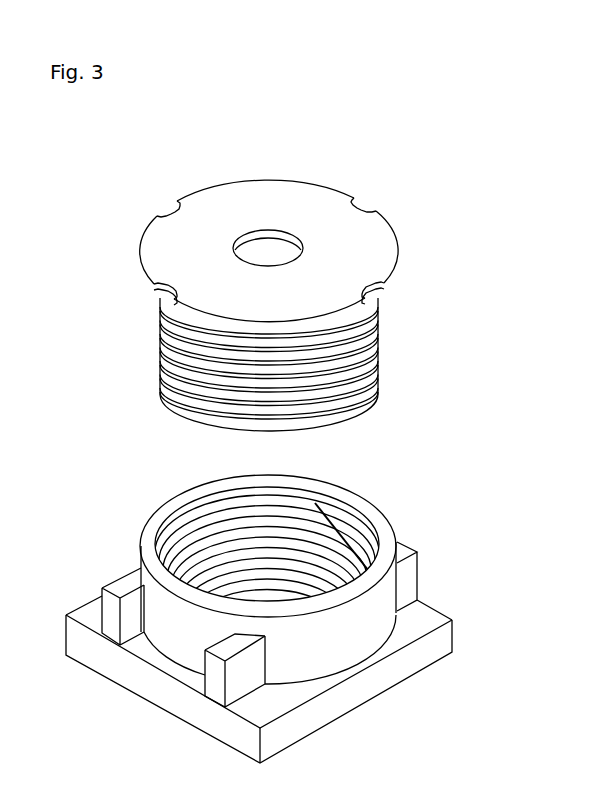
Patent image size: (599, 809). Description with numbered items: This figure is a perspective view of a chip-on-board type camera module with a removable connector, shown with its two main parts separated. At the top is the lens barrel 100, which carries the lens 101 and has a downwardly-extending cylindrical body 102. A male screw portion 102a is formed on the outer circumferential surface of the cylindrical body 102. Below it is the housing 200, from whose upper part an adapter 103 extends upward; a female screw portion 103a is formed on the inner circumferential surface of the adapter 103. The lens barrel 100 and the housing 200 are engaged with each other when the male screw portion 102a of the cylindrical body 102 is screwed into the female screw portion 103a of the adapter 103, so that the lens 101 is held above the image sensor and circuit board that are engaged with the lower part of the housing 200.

The lens barrel 100 is at (385, 248).
The lens 101 is at (265, 246).
The cylindrical body 102 is at (380, 320).
The male screw portion 102a is at (372, 358).
The adapter 103 is at (378, 607).
The female screw portion 103a is at (320, 514).
The housing 200 is at (388, 679).